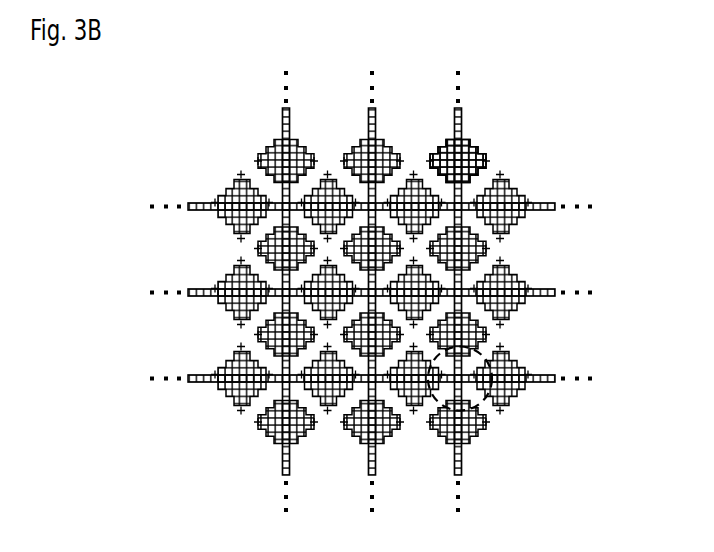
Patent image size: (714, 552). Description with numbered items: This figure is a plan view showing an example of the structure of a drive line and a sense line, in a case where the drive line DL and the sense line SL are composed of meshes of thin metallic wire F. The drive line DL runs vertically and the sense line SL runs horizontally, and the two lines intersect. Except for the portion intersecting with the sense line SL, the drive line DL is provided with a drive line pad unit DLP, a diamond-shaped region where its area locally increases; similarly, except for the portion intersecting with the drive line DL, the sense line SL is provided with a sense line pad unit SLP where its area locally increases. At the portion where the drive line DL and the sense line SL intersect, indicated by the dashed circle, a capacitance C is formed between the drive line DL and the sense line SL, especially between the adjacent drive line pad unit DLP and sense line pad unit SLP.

The thin metallic wire F is at (482, 159).
The sense line SL is at (545, 376).
The sense line pad unit SLP is at (512, 403).
The capacitance C is at (435, 401).
The drive line pad unit DLP is at (470, 438).
The drive line DL is at (463, 463).